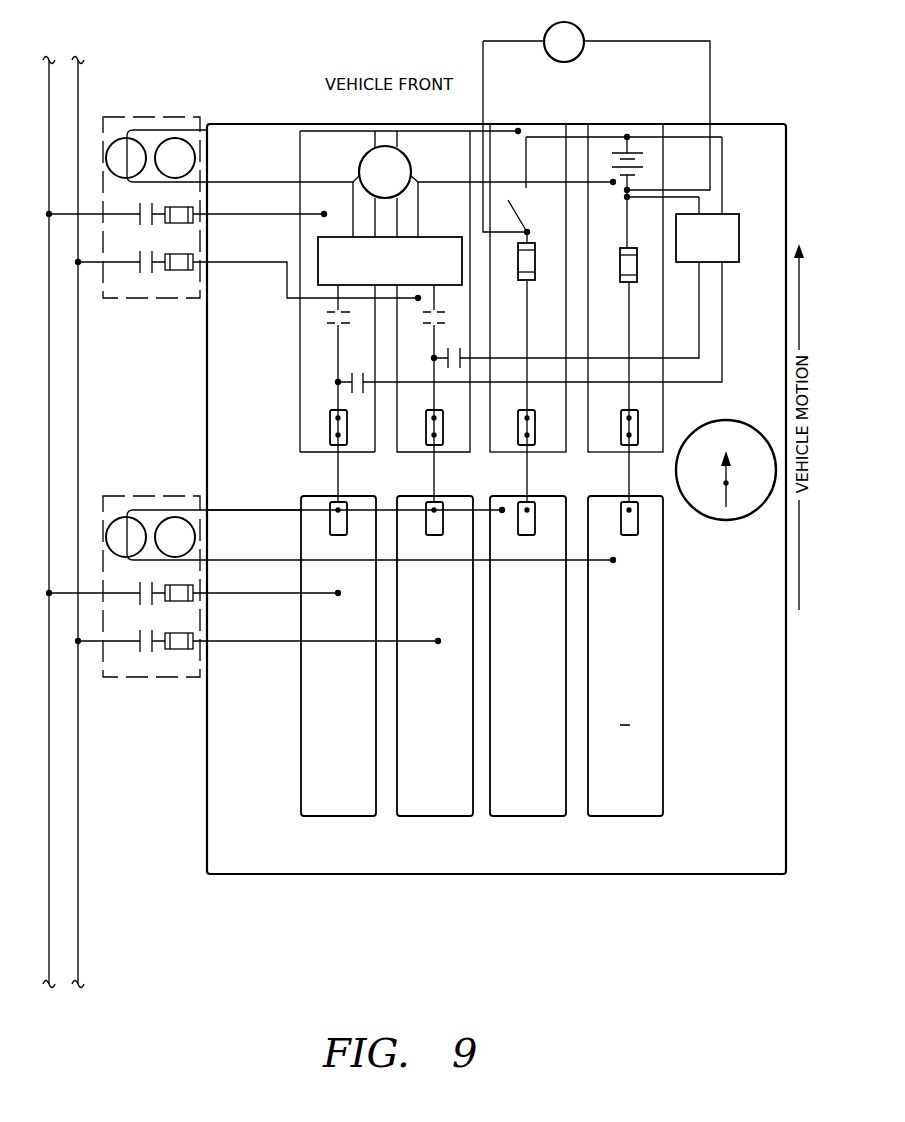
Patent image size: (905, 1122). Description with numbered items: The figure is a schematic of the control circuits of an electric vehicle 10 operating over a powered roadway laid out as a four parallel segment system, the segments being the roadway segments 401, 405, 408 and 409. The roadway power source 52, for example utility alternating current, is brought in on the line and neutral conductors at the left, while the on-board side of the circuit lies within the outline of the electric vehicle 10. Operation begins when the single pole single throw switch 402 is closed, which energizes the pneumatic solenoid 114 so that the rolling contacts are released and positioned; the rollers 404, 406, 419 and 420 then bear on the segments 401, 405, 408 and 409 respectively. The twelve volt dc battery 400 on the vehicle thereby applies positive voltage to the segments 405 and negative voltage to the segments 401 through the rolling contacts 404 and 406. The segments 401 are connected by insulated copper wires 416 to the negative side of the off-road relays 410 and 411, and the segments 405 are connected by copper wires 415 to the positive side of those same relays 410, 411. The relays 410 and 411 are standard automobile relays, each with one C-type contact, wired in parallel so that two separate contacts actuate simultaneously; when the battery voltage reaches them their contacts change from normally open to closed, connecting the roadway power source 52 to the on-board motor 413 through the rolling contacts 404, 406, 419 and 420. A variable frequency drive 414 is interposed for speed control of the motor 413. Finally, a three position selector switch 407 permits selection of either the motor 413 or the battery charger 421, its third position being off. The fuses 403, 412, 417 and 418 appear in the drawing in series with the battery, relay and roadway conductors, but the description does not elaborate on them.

The electric vehicle 10 is at (240, 875).
The power source 52 is at (49, 945).
The pneumatic cylinder solenoid 114 is at (596, 127).
The 12 v dc battery 400 is at (636, 150).
The roadway segment 401 is at (610, 629).
The single pole single throw switch 402 is at (606, 190).
The fuse 403 is at (533, 254).
The rolling contact 404 is at (518, 428).
The roadway segment 405 is at (512, 629).
The rolling contact 406 is at (621, 428).
The three position selector switch 407 is at (718, 408).
The roadway segment 408 is at (323, 629).
The roadway segment 409 is at (419, 629).
The off-road relay 410 is at (116, 140).
The off-road relay 411 is at (160, 140).
The fuse 412 is at (187, 206).
The motor 413 is at (380, 151).
The variable frequency drive 414 is at (422, 240).
The copper wires 415 is at (254, 123).
The copper wires 416 is at (254, 181).
The conductor 417 is at (268, 213).
The conductor 418 is at (268, 261).
The rolling contact 419 is at (330, 428).
The rolling contact 420 is at (427, 428).
The battery charger 421 is at (686, 262).